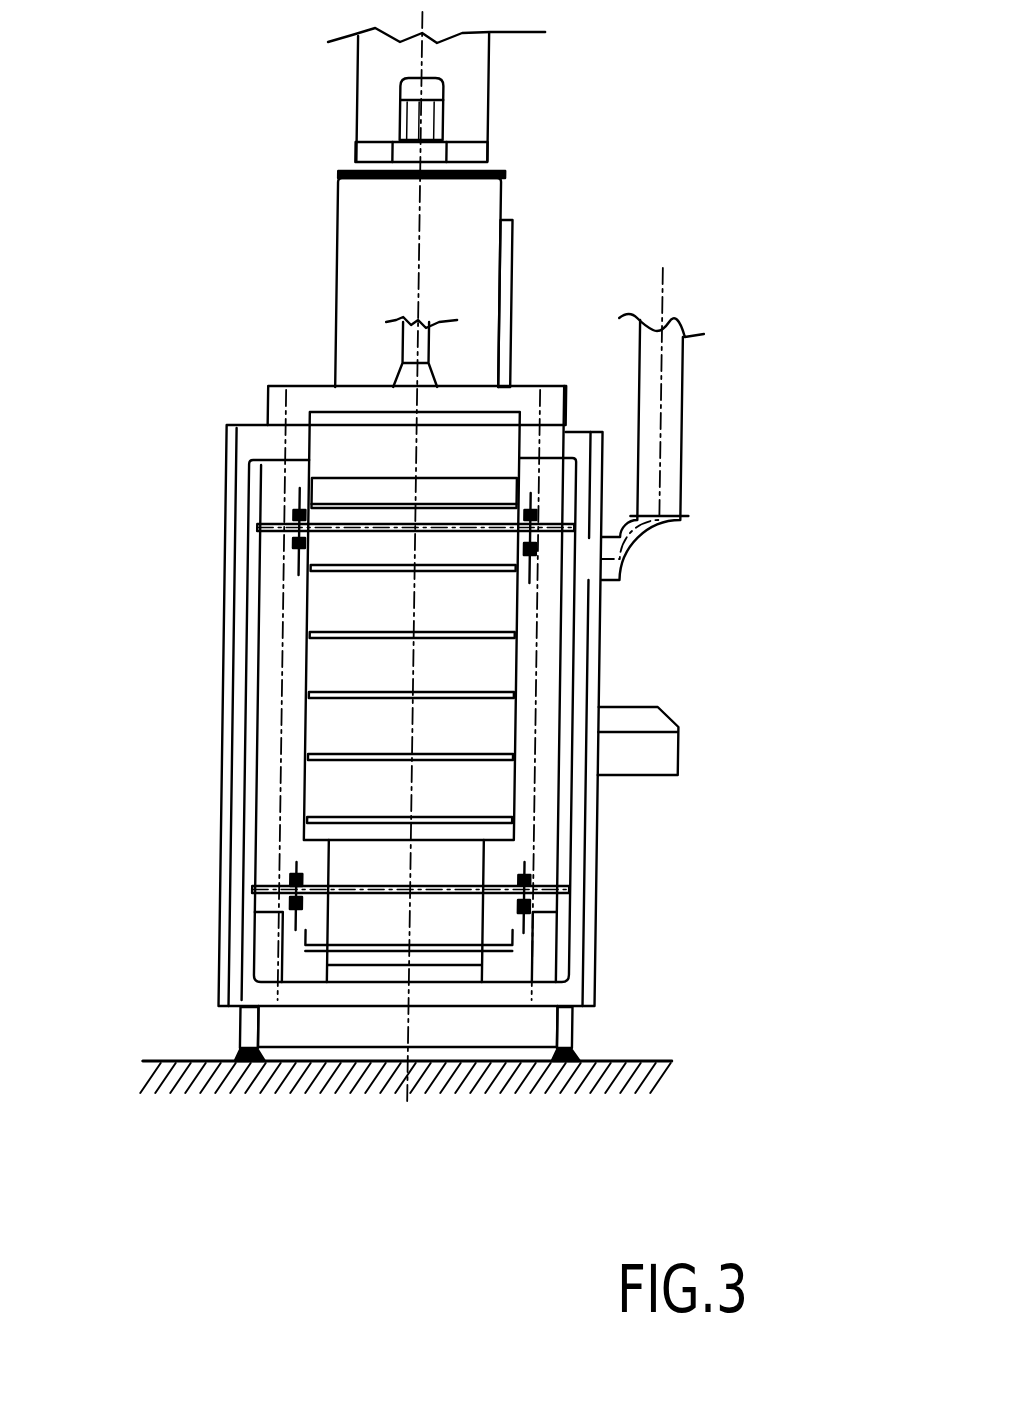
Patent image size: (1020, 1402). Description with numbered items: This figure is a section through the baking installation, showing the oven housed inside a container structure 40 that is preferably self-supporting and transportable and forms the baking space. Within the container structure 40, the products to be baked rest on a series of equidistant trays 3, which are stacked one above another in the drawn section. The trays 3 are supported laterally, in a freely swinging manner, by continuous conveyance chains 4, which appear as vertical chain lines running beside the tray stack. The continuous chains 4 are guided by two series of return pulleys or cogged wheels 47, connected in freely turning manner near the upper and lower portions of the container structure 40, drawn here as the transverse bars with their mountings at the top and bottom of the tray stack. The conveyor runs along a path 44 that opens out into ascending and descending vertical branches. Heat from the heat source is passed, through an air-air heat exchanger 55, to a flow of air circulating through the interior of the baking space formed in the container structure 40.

The container structure 40 is at (254, 498).
The return pulleys or cogged wheels 47 is at (299, 556).
The heat exchanger 55 is at (348, 725).
The path 44 is at (412, 795).
The trays 3 is at (475, 641).
The continuous conveyance chains 4 is at (531, 781).